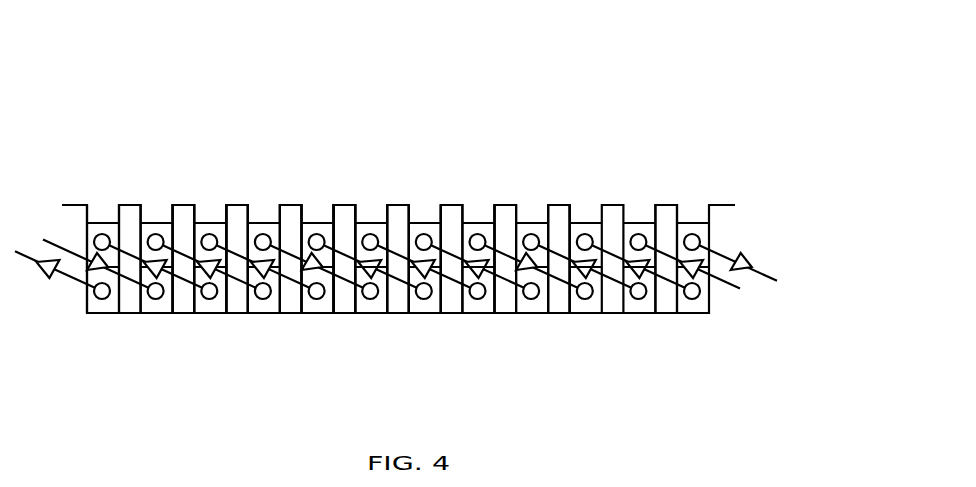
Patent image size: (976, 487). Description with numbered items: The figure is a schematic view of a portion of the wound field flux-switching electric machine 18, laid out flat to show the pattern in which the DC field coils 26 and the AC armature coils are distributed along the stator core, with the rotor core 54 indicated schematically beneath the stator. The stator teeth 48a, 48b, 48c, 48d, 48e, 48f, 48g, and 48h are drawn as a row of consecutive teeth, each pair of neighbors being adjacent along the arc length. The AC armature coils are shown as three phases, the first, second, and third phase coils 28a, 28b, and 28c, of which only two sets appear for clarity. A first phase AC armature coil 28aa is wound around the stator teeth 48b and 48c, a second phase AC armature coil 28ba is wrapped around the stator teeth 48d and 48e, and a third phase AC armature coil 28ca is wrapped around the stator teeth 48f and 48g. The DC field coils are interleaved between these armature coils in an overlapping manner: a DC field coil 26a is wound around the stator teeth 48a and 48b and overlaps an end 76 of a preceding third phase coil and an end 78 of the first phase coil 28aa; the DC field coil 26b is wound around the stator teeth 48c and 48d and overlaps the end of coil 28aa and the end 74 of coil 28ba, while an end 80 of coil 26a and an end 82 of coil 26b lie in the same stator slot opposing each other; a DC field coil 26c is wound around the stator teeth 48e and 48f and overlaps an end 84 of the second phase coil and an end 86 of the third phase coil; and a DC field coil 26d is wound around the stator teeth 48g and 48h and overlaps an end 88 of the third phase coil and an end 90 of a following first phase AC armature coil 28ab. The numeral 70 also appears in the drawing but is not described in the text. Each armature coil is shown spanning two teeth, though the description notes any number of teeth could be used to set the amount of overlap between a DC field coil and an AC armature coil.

The wound field flux-switching electric machine 18 is at (569, 62).
The DC field coils 26 is at (588, 220).
The DC field coil 26a is at (243, 313).
The DC field coil 26b is at (347, 313).
The DC field coil 26c is at (380, 212).
The DC field coil 26d is at (480, 218).
The first phase AC armature coil 28a is at (293, 313).
The first phase AC armature coil 28aa is at (238, 215).
The first phase AC armature coil 28ab is at (563, 218).
The second phase AC armature coil 28b is at (347, 211).
The second phase AC armature coil 28ba is at (397, 313).
The third phase AC armature coil 28c is at (432, 218).
The third phase AC armature coil 28ca is at (507, 313).
The stator tooth 48a is at (173, 206).
The stator tooth 48b is at (224, 205).
The stator tooth 48c is at (288, 206).
The stator tooth 48d is at (330, 206).
The stator tooth 48e is at (388, 206).
The stator tooth 48f is at (448, 215).
The stator tooth 48g is at (503, 313).
The stator tooth 48h is at (560, 208).
The rotor core 54 is at (633, 218).
The inlet port 70 is at (317, 299).
The end of second phase AC armature coil 74 is at (317, 234).
The end of third phase AC armature coil 76 is at (209, 299).
The end of first phase AC armature coil 78 is at (209, 234).
The end of DC field coil 80 is at (263, 299).
The end of DC field coil 82 is at (263, 234).
The end of second phase AC armature coil 84 is at (424, 299).
The end of third phase AC armature coil 86 is at (424, 234).
The end of third phase AC armature coil 88 is at (531, 299).
The end of first phase AC armature coil 90 is at (531, 234).